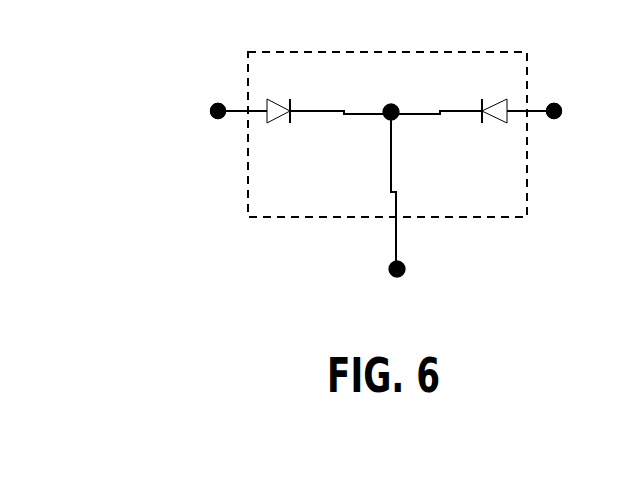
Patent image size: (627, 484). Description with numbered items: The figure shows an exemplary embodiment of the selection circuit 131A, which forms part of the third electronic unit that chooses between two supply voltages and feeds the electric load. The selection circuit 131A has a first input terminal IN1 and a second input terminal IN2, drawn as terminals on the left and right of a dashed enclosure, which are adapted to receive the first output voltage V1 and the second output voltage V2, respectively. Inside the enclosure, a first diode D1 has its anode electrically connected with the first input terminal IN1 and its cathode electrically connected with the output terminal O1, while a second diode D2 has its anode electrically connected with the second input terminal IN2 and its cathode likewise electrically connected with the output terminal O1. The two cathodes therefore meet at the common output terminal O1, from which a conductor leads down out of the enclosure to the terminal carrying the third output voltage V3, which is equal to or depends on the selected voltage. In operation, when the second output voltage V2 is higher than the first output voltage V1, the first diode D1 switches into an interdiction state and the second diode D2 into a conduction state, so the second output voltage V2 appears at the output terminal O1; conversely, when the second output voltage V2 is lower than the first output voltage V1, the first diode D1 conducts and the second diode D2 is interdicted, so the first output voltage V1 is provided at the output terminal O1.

The selection circuit 131A is at (507, 232).
The first diode D1 is at (281, 127).
The second diode D2 is at (498, 127).
The first input terminal IN1 is at (207, 130).
The second input terminal IN2 is at (563, 130).
The first output voltage V1 is at (202, 101).
The second output voltage V2 is at (571, 101).
The output terminal O1 is at (392, 96).
The third output voltage V3 is at (414, 260).